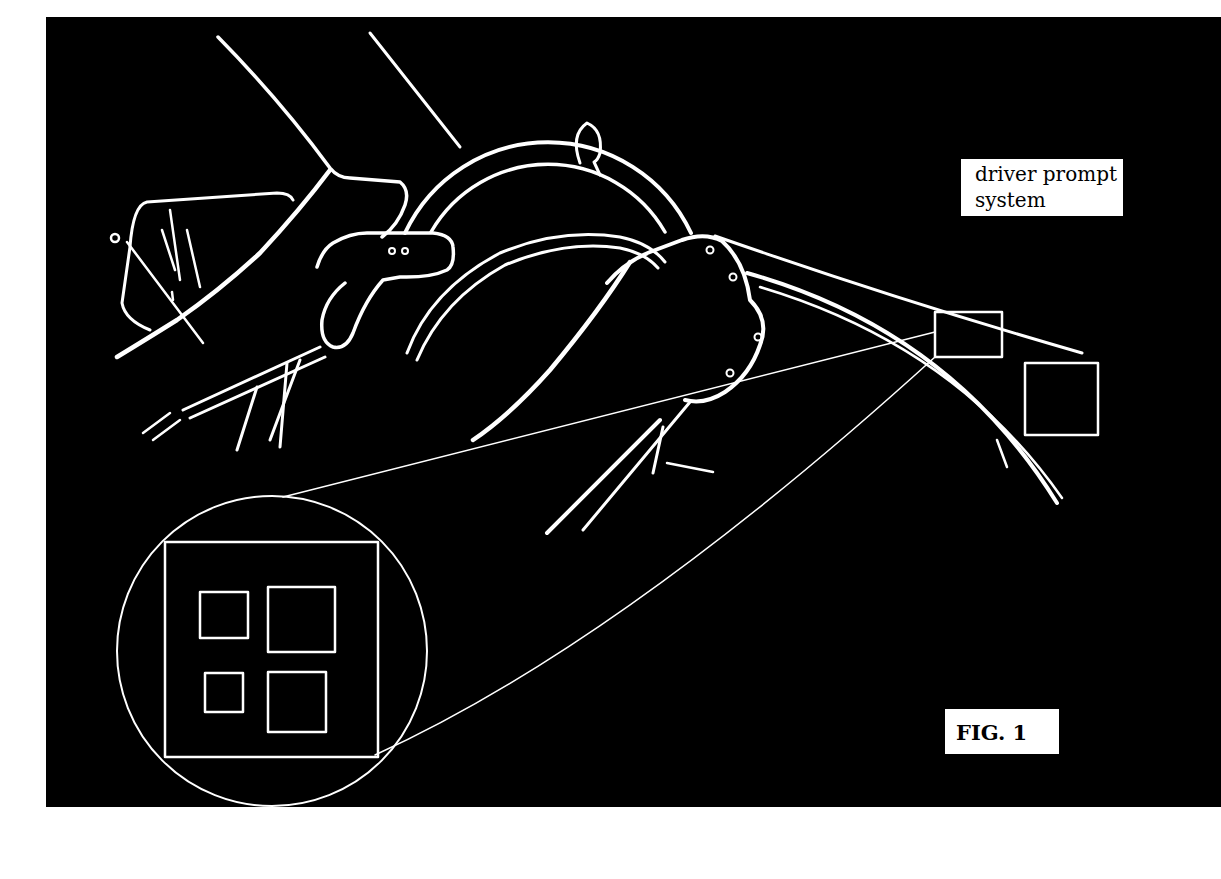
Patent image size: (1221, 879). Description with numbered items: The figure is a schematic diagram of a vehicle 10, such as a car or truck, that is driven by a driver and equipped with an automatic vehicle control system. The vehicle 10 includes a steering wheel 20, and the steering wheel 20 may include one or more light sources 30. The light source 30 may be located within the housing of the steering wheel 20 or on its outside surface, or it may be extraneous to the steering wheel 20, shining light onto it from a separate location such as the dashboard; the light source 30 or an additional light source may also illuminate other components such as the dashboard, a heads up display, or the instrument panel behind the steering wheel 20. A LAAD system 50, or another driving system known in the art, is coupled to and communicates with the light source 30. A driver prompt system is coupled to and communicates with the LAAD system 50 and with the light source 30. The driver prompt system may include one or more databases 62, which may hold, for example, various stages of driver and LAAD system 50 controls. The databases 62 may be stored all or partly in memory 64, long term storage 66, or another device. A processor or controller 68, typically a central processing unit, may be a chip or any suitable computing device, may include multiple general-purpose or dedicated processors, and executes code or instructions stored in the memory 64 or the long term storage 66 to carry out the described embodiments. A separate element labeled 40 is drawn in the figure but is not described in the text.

The vehicle 10 is at (427, 97).
The steering wheel 20 is at (683, 227).
The light source 30 is at (593, 153).
The display module 40 is at (935, 312).
The LAAD system 50 is at (1053, 370).
The database 62 is at (327, 727).
The memory 64 is at (200, 592).
The long term storage 66 is at (338, 608).
The processor or controller 68 is at (207, 713).